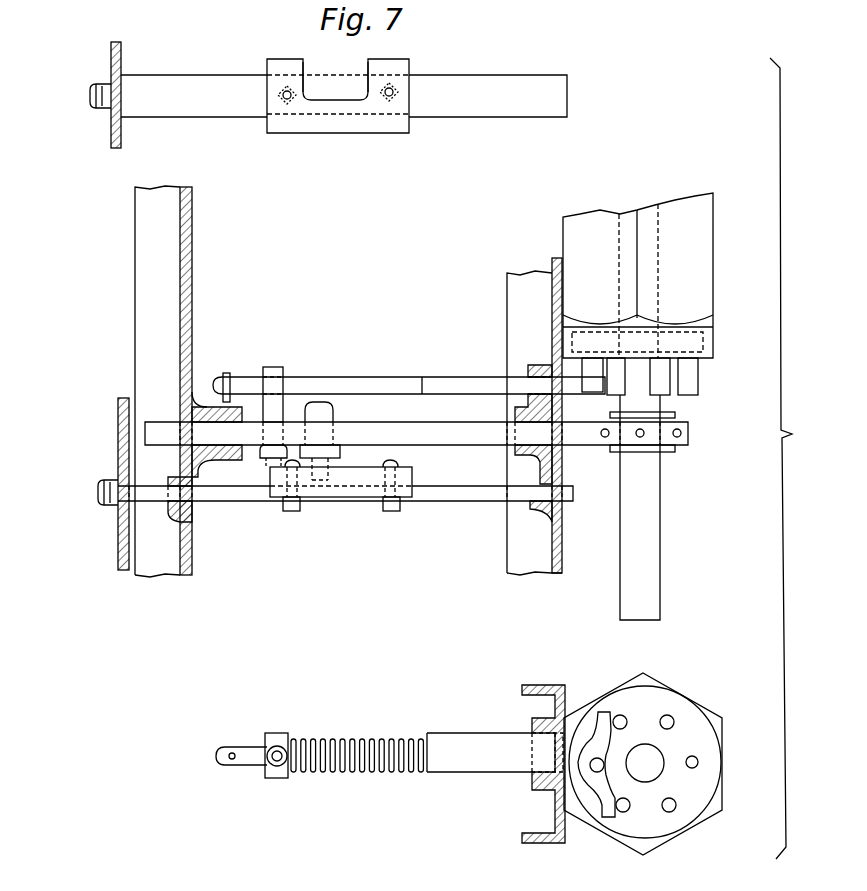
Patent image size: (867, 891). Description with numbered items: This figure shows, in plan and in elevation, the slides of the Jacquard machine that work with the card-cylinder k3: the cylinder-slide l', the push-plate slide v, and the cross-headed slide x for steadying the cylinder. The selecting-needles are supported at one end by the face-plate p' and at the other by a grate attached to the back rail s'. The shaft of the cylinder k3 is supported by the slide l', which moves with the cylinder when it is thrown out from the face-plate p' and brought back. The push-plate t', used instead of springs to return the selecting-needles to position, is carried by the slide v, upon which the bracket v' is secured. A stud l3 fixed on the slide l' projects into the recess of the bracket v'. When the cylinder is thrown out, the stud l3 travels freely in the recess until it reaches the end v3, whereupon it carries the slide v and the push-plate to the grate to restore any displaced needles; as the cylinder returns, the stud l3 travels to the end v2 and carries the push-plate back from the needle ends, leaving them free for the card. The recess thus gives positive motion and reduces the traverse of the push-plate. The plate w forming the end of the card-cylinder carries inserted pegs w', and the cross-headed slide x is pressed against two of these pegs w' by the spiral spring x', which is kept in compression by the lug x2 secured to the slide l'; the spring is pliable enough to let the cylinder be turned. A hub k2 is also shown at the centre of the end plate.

The push-plate t' is at (331, 306).
The slide v is at (344, 96).
The bracket v' is at (339, 285).
The end of the recess v2 is at (314, 65).
The end of the recess v3 is at (361, 65).
The back rail s' is at (188, 381).
The face-plate p' is at (547, 559).
The slide l' is at (416, 430).
The stud l3 is at (328, 441).
The cross-headed slide x is at (409, 572).
The spiral spring x' is at (319, 766).
The lug x2 is at (274, 740).
The plate w is at (642, 515).
The pegs w' is at (656, 587).
The shaft k2 is at (645, 763).
The cylinder k3 is at (643, 767).